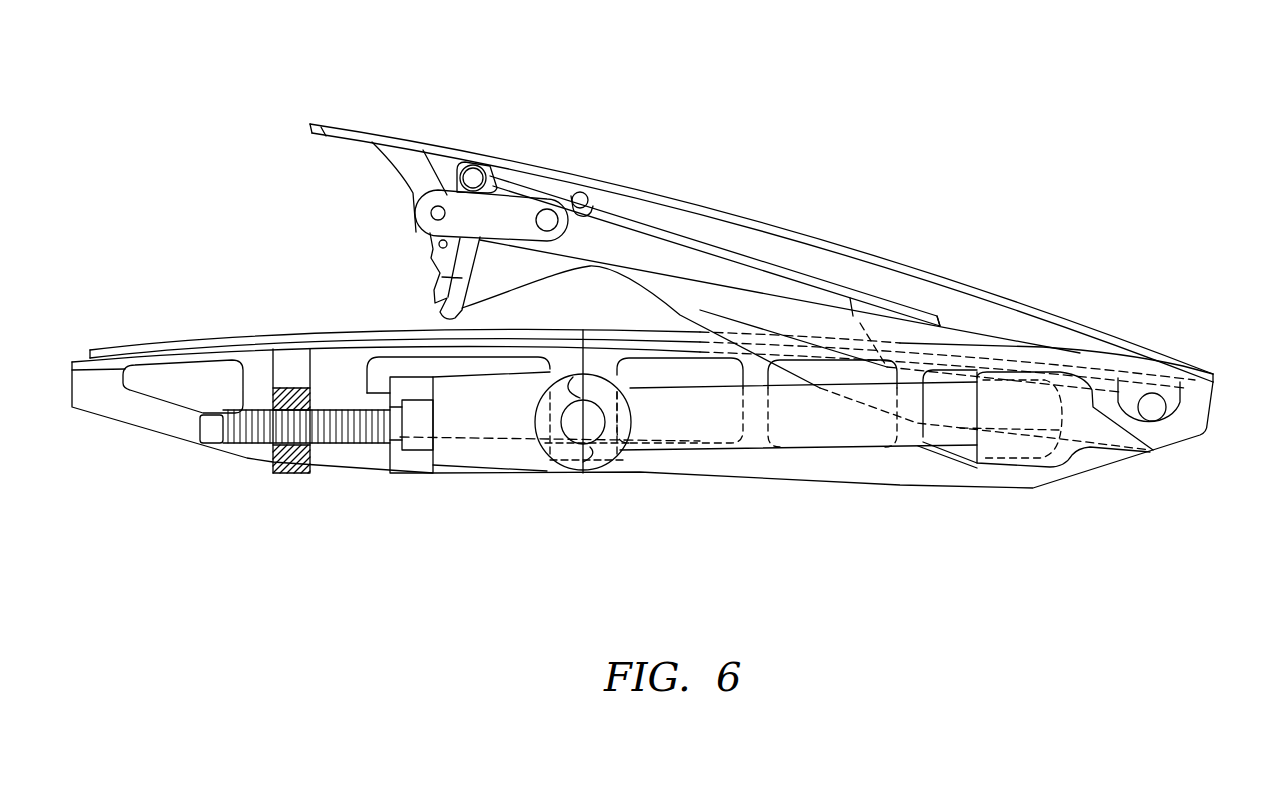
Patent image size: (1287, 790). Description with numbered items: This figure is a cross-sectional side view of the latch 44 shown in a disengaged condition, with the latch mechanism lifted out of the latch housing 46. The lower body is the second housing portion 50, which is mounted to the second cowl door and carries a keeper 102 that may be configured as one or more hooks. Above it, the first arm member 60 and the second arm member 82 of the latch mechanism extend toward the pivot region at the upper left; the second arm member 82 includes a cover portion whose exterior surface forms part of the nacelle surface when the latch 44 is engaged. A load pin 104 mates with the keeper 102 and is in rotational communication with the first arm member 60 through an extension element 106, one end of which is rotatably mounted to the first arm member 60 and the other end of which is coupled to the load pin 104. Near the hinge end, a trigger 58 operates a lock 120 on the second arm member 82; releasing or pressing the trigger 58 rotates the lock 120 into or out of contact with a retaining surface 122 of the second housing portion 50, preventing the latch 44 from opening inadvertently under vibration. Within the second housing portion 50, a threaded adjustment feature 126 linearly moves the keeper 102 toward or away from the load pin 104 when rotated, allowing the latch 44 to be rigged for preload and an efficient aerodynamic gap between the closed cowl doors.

The latch 44 is at (942, 166).
The latch housing 46 is at (1207, 329).
The second housing portion 50 is at (137, 412).
The trigger 58 is at (451, 149).
The first arm member 60 is at (728, 313).
The second arm member 82 is at (608, 230).
The keeper 102 is at (610, 452).
The load pin 104 is at (572, 470).
The extension element 106 is at (826, 430).
The lock 120 is at (437, 273).
The retaining surface 122 is at (411, 494).
The adjustment feature 126 is at (344, 484).